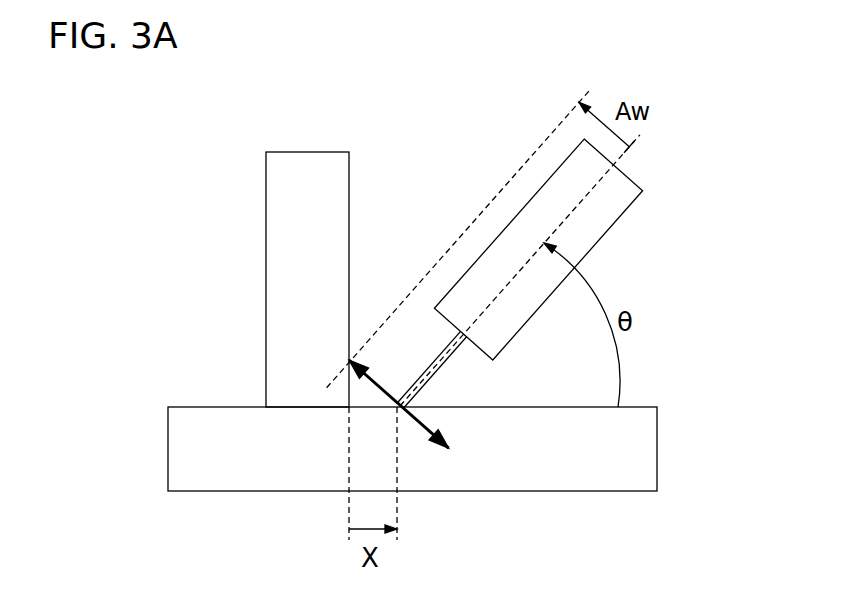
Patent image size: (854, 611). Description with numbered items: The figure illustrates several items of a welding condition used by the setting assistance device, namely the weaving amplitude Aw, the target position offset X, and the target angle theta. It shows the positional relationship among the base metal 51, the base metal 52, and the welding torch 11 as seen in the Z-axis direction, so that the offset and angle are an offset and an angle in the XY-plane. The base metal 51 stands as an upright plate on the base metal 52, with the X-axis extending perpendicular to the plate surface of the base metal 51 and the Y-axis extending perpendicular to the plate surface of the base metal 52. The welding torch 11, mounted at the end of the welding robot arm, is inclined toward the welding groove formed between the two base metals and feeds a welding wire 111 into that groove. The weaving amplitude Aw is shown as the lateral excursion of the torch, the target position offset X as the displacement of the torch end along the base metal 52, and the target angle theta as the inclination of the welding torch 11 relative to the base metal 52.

The welding torch 11 is at (620, 218).
The welding wire 111 is at (385, 391).
The base metal 51 is at (306, 152).
The base metal 52 is at (229, 490).